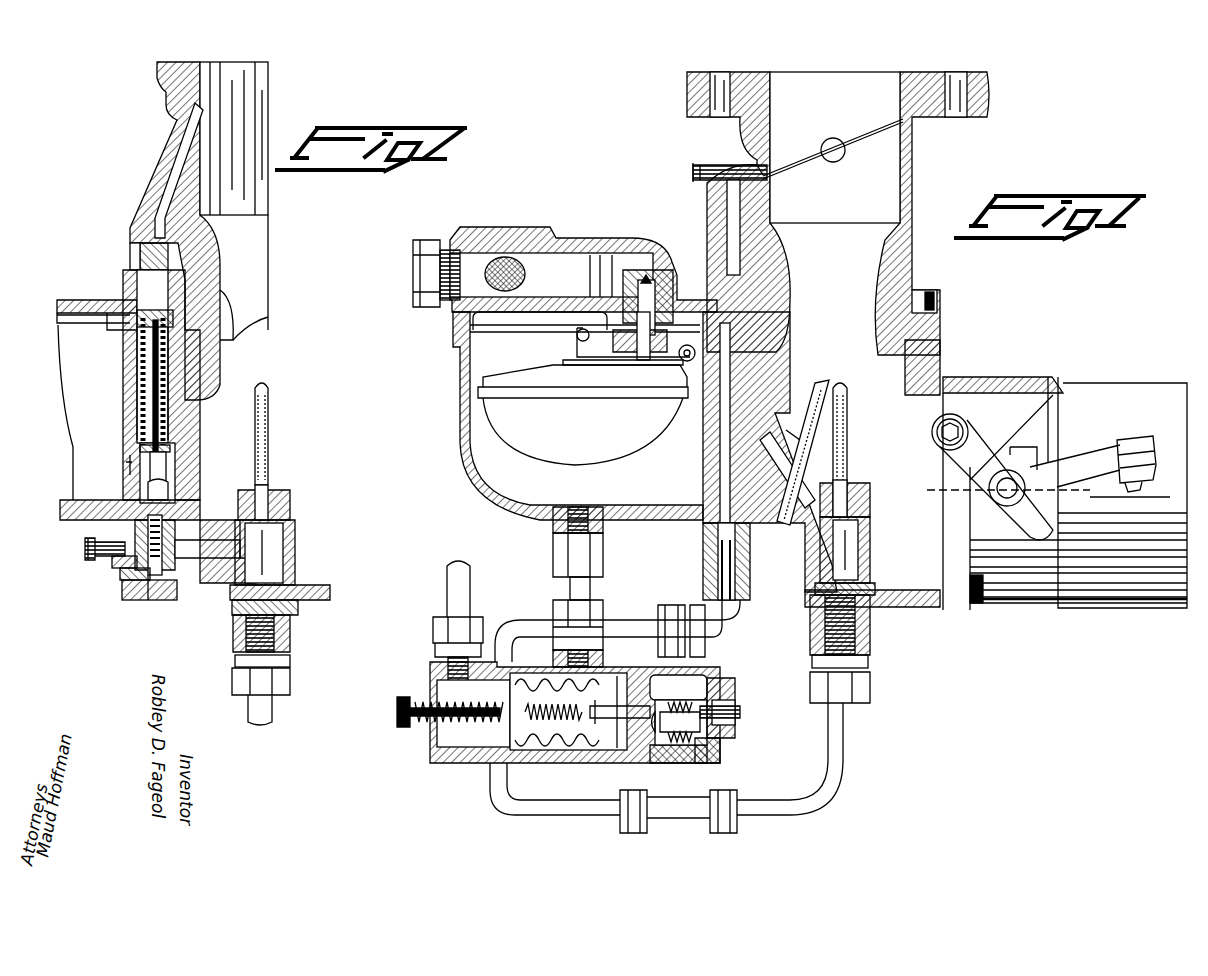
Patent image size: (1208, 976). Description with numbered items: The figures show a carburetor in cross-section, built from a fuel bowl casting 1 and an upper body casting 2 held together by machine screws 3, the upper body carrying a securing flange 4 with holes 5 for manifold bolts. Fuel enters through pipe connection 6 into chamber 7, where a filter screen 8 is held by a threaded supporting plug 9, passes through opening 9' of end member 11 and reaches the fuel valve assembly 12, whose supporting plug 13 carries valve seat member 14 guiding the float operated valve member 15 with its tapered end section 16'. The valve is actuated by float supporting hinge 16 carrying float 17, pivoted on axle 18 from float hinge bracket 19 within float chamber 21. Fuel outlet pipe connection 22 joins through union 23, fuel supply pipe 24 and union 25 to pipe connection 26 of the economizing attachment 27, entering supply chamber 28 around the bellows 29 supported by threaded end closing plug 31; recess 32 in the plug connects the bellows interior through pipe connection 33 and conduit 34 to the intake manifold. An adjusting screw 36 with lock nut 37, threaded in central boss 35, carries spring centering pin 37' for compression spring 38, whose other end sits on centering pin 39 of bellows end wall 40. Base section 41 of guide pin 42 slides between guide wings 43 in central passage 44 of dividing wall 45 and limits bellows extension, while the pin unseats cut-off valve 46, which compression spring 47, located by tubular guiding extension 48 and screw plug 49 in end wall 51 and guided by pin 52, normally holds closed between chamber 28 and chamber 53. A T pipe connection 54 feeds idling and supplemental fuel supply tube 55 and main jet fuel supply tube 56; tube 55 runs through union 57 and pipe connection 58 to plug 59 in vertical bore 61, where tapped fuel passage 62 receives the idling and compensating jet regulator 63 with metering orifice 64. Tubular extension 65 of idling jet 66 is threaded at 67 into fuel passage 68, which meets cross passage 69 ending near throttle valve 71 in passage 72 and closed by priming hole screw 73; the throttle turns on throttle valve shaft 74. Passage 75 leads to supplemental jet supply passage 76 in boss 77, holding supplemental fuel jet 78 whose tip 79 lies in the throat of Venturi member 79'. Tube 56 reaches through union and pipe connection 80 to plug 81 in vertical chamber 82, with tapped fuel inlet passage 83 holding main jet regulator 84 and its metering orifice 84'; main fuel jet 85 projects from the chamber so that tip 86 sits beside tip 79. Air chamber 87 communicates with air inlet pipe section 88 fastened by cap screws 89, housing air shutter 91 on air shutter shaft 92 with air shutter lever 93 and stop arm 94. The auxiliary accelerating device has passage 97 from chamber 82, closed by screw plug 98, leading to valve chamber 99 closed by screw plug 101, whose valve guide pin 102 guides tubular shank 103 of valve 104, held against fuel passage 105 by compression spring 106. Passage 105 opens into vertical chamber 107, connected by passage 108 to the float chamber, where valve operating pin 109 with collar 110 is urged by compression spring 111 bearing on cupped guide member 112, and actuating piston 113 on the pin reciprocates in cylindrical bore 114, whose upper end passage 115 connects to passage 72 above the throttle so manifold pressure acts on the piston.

In FIG. 1, the fuel bowl casting 1 is at (932, 356).
In FIG. 2, the upper body casting 2 is at (176, 119).
In FIG. 1, the upper body casting 2 is at (908, 232).
In FIG. 1, the cap or machine screws 3 is at (930, 290).
In FIG. 1, the securing flange 4 is at (990, 100).
In FIG. 1, the holes 5 is at (718, 108).
In FIG. 1, the pipe connection 6 is at (536, 241).
In FIG. 1, the chamber 7 is at (570, 246).
In FIG. 1, the filter screen 8 is at (591, 253).
In FIG. 1, the threaded supporting plug 9 is at (436, 260).
In FIG. 1, the opening 9' is at (626, 254).
In FIG. 1, the end member 11 is at (590, 262).
In FIG. 1, the fuel valve assembly 12 is at (661, 292).
In FIG. 1, the fuel valve supporting plug 13 is at (577, 340).
In FIG. 1, the valve seat member 14 is at (650, 272).
In FIG. 1, the float operated valve member 15 is at (666, 300).
In FIG. 1, the float supporting hinge 16 is at (671, 257).
In FIG. 1, the needle valve collar 16' is at (625, 350).
In FIG. 1, the float 17 is at (480, 398).
In FIG. 1, the axle 18 is at (676, 363).
In FIG. 1, the float hinge bracket 19 is at (691, 361).
In FIG. 2, the float chamber 21 is at (76, 435).
In FIG. 1, the float chamber 21 is at (480, 432).
In FIG. 1, the fuel outlet pipe connection 22 is at (553, 520).
In FIG. 1, the union 23 is at (553, 565).
In FIG. 1, the fuel supply pipe 24 is at (572, 590).
In FIG. 1, the union 25 is at (605, 606).
In FIG. 1, the pipe connection 26 is at (604, 658).
In FIG. 1, the gas fume eliminator and economizing device 27 is at (733, 663).
In FIG. 1, the supply chamber 28 is at (611, 760).
In FIG. 1, the bellows 29 is at (590, 768).
In FIG. 1, the threaded end closing plug 31 is at (476, 764).
In FIG. 1, the recess 32 is at (440, 686).
In FIG. 1, the pipe connection 33 is at (433, 626).
In FIG. 1, the conduit 34 is at (450, 572).
In FIG. 1, the central boss 35 is at (442, 740).
In FIG. 1, the adjusting screw 36 is at (400, 721).
In FIG. 1, the lock nut 37 is at (434, 698).
In FIG. 1, the spring centering pin 37' is at (553, 699).
In FIG. 1, the compression spring 38 is at (556, 716).
In FIG. 1, the centering pin 39 is at (604, 705).
In FIG. 1, the end wall 40 is at (586, 710).
In FIG. 1, the base section 41 is at (589, 720).
In FIG. 1, the guide pin 42 is at (606, 728).
In FIG. 1, the guide wings 43 is at (678, 686).
In FIG. 1, the central passage 44 is at (664, 766).
In FIG. 1, the dividing wall 45 is at (668, 710).
In FIG. 1, the cut-off valve 46 is at (657, 725).
In FIG. 1, the compression spring 47 is at (712, 680).
In FIG. 1, the tubular guiding extension 48 is at (717, 746).
In FIG. 1, the screw plug 49 is at (731, 700).
In FIG. 1, the end wall 51 is at (712, 760).
In FIG. 1, the pin 52 is at (736, 712).
In FIG. 1, the chamber 53 is at (736, 722).
In FIG. 1, the T pipe connection 54 is at (656, 832).
In FIG. 1, the idling and supplemental fuel supply tube 55 is at (566, 815).
In FIG. 2, the main jet fuel supply tube 56 is at (270, 712).
In FIG. 1, the main jet fuel supply tube 56 is at (845, 748).
In FIG. 1, the union 57 is at (672, 606).
In FIG. 1, the pipe connection 58 is at (738, 641).
In FIG. 1, the plug 59 is at (748, 596).
In FIG. 1, the vertical bore 61 is at (712, 530).
In FIG. 1, the tapped fuel passage 62 is at (716, 555).
In FIG. 1, the idling and compensating jet regulator 63 is at (745, 578).
In FIG. 1, the fuel metering orifice 64 is at (696, 606).
In FIG. 1, the tubular extension 65 is at (720, 440).
In FIG. 1, the idling jet 66 is at (774, 320).
In FIG. 1, the threaded upper end 67 is at (679, 306).
In FIG. 1, the fuel passage 68 is at (728, 224).
In FIG. 1, the cross passage 69 is at (766, 170).
In FIG. 1, the throttle valve 71 is at (857, 142).
In FIG. 2, the passage 72 is at (255, 100).
In FIG. 1, the passage 72 is at (896, 176).
In FIG. 1, the priming hole screw 73 is at (696, 172).
In FIG. 1, the throttle valve shaft 74 is at (843, 161).
In FIG. 1, the passage 75 is at (778, 475).
In FIG. 1, the supplemental jet supply passage 76 is at (777, 508).
In FIG. 1, the boss 77 is at (828, 480).
In FIG. 1, the supplemental fuel jet 78 is at (792, 437).
In FIG. 1, the tip 79 is at (805, 433).
In FIG. 2, the Venturi member 79' is at (259, 277).
In FIG. 1, the Venturi member 79' is at (928, 243).
In FIG. 2, the union and pipe connection 80 is at (288, 677).
In FIG. 1, the union and pipe connection 80 is at (868, 691).
In FIG. 2, the plug 81 is at (232, 622).
In FIG. 1, the plug 81 is at (810, 638).
In FIG. 2, the vertical chamber 82 is at (272, 547).
In FIG. 1, the vertical chamber 82 is at (856, 549).
In FIG. 1, the tapped fuel inlet passage 83 is at (864, 580).
In FIG. 2, the main jet regulator 84 is at (277, 610).
In FIG. 1, the main jet regulator 84 is at (857, 625).
In FIG. 2, the metering orifice 84' is at (257, 601).
In FIG. 1, the metering orifice 84' is at (872, 593).
In FIG. 2, the main fuel jet 85 is at (268, 500).
In FIG. 1, the main fuel jet 85 is at (855, 496).
In FIG. 2, the tip 86 is at (270, 455).
In FIG. 1, the tip 86 is at (848, 441).
In FIG. 1, the air chamber 87 is at (942, 396).
In FIG. 1, the air inlet pipe section 88 is at (998, 605).
In FIG. 1, the cap screws 89 is at (975, 608).
In FIG. 1, the air shutter 91 is at (930, 488).
In FIG. 1, the air shutter shaft 92 is at (1006, 505).
In FIG. 1, the air shutter lever 93 is at (1010, 460).
In FIG. 1, the stop arm 94 is at (1098, 460).
In FIG. 2, the passage 97 is at (195, 550).
In FIG. 2, the screw plug 98 is at (90, 540).
In FIG. 2, the valve chamber 99 is at (122, 573).
In FIG. 2, the screw plug 101 is at (130, 598).
In FIG. 2, the valve guide pin 102 is at (150, 600).
In FIG. 2, the tubular shank 103 is at (152, 530).
In FIG. 2, the valve 104 is at (132, 506).
In FIG. 2, the fuel passage 105 is at (160, 510).
In FIG. 2, the compression spring 106 is at (118, 563).
In FIG. 2, the vertical chamber 107 is at (166, 465).
In FIG. 2, the passage 108 is at (130, 468).
In FIG. 2, the valve operating pin 109 is at (150, 388).
In FIG. 2, the collar 110 is at (176, 447).
In FIG. 2, the compression spring 111 is at (176, 432).
In FIG. 2, the cupped guide member 112 is at (134, 330).
In FIG. 2, the actuating piston 113 is at (142, 250).
In FIG. 2, the cylindrical bore 114 is at (142, 303).
In FIG. 2, the passage 115 is at (172, 178).